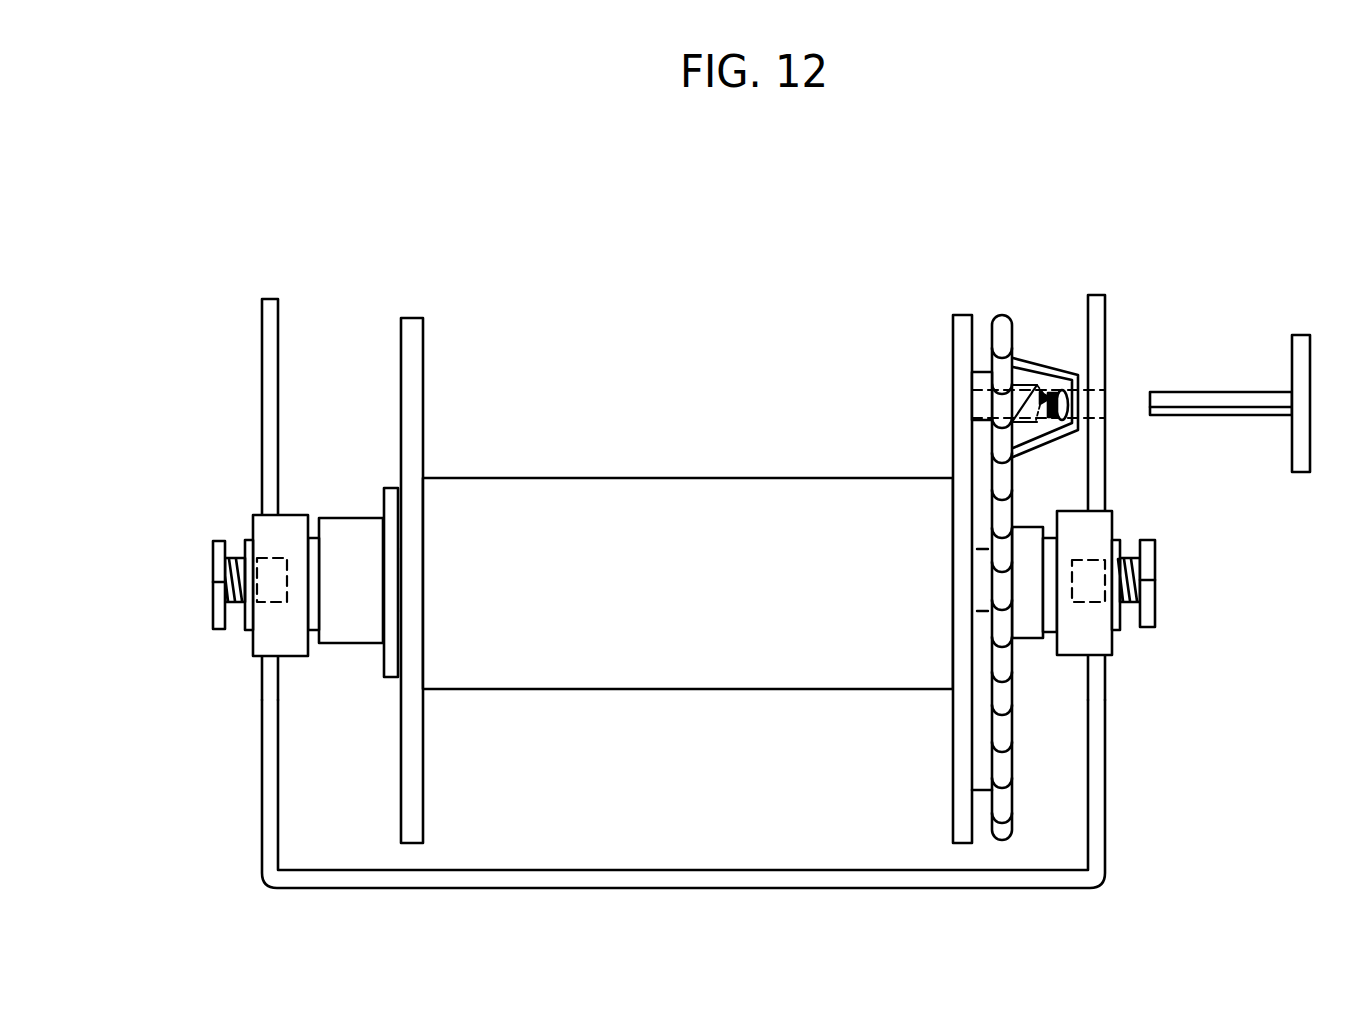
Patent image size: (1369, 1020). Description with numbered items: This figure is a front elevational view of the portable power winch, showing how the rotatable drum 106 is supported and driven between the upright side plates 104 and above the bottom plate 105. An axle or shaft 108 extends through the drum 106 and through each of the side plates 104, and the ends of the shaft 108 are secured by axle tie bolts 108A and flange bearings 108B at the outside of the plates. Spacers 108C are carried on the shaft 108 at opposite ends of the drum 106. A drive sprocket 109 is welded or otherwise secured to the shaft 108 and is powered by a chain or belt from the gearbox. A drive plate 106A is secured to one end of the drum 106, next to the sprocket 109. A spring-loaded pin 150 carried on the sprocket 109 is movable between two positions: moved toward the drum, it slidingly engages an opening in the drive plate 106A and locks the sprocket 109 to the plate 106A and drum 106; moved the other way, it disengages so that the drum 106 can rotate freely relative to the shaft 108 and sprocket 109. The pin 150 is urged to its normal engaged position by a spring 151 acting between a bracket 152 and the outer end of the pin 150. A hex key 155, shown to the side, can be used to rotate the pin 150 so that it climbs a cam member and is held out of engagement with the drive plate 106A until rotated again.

The side plates 104 is at (280, 342).
The bottom plate 105 is at (703, 878).
The rotatable drum 106 is at (729, 472).
The drive plate 106A is at (980, 372).
The axle or shaft 108 is at (575, 549).
The axle tie bolts 108A is at (214, 541).
The flange bearings 108B is at (289, 660).
The spacers 108C is at (352, 483).
The drive sprocket 109 is at (1003, 315).
The spring-loaded pin 150 is at (1046, 398).
The spring 151 is at (1066, 407).
The bracket 152 is at (1038, 362).
The hex key 155 is at (1240, 415).